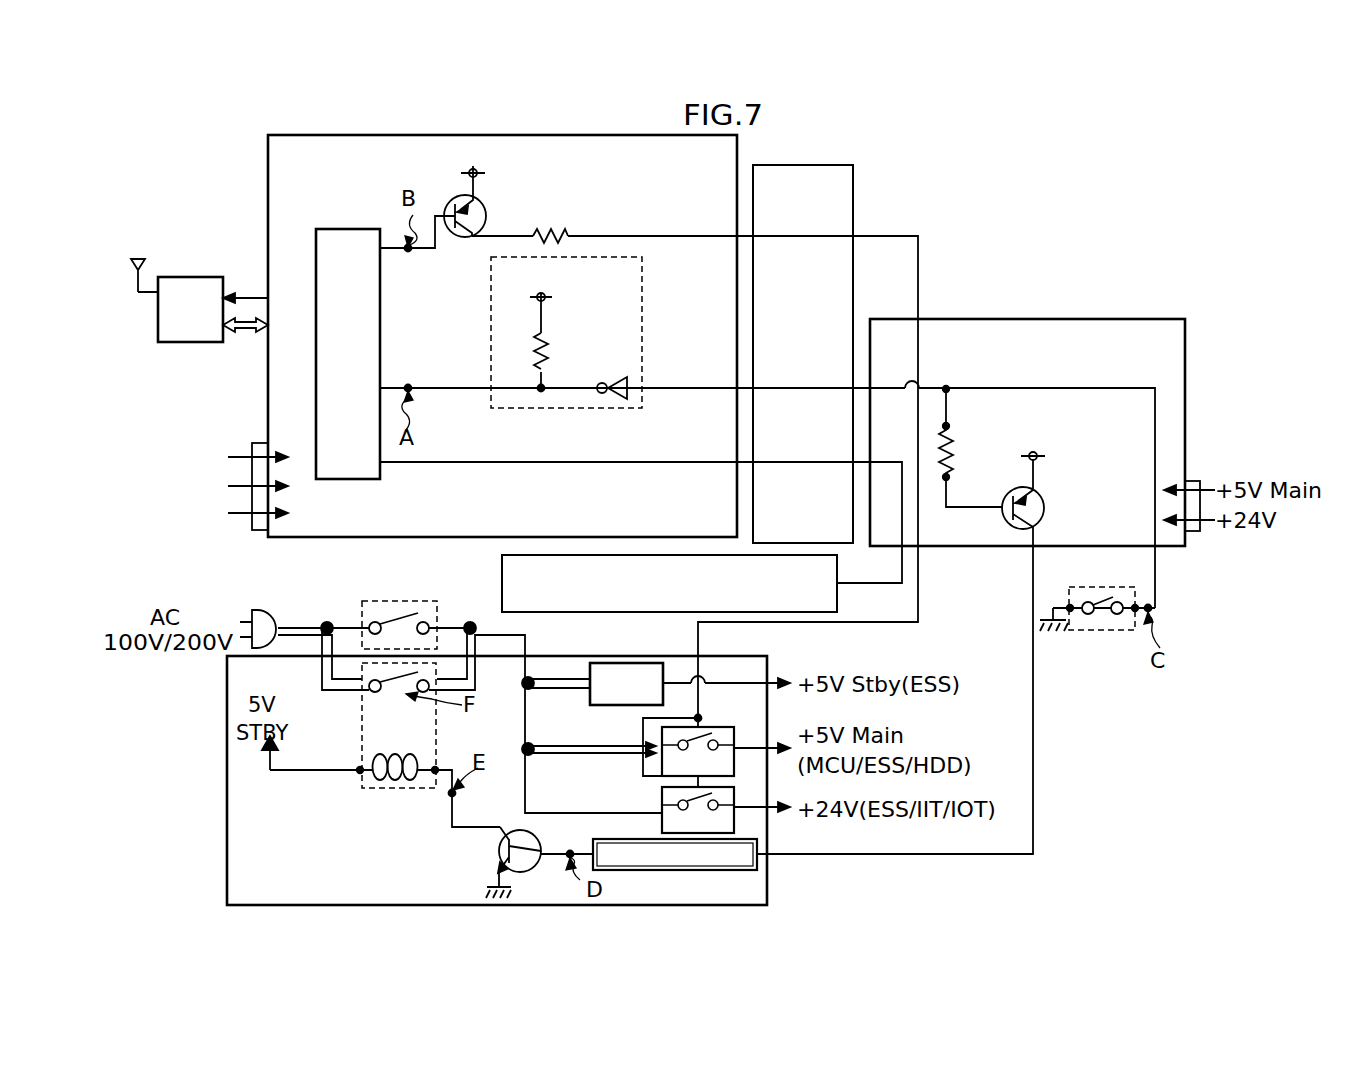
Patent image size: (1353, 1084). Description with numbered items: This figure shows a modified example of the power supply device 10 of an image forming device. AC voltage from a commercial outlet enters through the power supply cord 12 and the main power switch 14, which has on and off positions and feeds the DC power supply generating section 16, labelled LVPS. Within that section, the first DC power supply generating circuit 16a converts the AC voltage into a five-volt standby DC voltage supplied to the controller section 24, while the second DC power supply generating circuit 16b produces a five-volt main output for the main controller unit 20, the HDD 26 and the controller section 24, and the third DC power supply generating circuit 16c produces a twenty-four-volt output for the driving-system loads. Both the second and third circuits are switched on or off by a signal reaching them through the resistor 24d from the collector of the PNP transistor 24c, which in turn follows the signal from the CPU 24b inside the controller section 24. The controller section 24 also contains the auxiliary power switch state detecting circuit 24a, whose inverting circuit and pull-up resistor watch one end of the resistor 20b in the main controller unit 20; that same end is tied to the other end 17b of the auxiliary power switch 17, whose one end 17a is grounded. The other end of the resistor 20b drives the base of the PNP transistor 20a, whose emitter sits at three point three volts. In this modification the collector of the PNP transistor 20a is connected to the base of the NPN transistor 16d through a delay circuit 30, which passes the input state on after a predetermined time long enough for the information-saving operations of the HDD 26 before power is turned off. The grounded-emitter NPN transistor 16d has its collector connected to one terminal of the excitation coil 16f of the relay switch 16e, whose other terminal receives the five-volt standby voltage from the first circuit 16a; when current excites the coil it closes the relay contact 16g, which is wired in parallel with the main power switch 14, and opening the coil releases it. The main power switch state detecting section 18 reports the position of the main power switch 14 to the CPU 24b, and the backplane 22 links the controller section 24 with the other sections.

The power supply device 10 is at (1010, 176).
The power supply cord 12 is at (277, 621).
The main power switch 14 is at (365, 572).
The DC power supply generating section (LVPS) 16 is at (227, 812).
The first DC power supply generating circuit 16a is at (629, 663).
The second DC power supply generating circuit 16b is at (722, 727).
The third DC power supply generating circuit 16c is at (662, 790).
The NPN transistor 16d is at (512, 828).
The relay switch 16e is at (322, 838).
The excitation coil 16f is at (393, 750).
The relay contact 16g is at (384, 700).
The auxiliary power switch 17 is at (1091, 635).
The one end of auxiliary power switch 17a is at (1070, 606).
The another end of auxiliary power switch 17b is at (1135, 606).
The main power switch state detecting section 18 is at (839, 570).
The main controller unit (MCU) 20 is at (1040, 319).
The PNP transistor 20a is at (1052, 500).
The resistor 20b is at (962, 456).
The backplane 22 is at (818, 165).
The controller section (ESS) 24 is at (268, 148).
The auxiliary power switch state detecting circuit 24a is at (467, 410).
The CPU 24b is at (343, 229).
The PNP transistor 24c is at (501, 210).
The resistor 24d is at (582, 222).
The HDD 26 is at (195, 277).
The delay circuit 30 is at (670, 872).